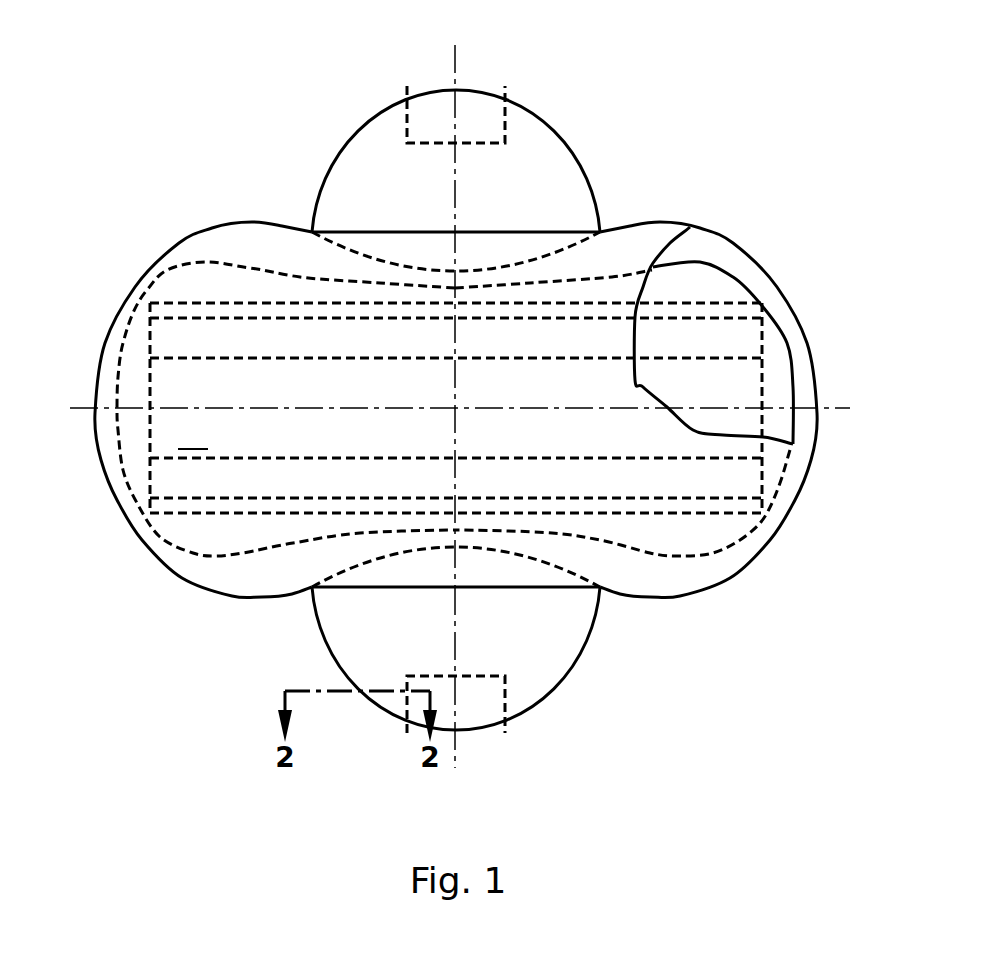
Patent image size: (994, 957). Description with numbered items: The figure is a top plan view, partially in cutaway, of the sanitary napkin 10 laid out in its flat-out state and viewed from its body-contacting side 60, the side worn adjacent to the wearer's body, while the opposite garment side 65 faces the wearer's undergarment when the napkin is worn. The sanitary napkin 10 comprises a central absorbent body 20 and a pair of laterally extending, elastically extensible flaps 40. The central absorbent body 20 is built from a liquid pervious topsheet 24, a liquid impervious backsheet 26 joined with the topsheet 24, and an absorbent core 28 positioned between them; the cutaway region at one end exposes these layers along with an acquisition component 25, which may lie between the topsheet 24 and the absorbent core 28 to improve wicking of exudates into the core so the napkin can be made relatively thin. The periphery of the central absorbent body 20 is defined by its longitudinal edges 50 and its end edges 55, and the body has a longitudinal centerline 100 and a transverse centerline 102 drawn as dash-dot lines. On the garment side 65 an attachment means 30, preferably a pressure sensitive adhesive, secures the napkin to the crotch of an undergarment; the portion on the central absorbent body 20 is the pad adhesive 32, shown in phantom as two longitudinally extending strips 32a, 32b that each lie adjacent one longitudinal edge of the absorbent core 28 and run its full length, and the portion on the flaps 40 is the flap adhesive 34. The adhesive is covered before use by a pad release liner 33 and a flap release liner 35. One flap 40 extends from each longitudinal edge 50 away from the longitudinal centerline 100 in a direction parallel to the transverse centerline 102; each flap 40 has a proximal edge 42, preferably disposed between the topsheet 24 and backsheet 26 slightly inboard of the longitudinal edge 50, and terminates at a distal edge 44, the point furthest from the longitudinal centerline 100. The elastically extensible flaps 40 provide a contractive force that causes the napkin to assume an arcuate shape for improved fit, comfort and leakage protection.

The sanitary napkin 10 is at (655, 101).
The central absorbent body 20 is at (706, 635).
The liquid pervious topsheet 24 is at (707, 532).
The acquisition component 25 is at (727, 292).
The liquid impervious backsheet 26 is at (750, 272).
The absorbent core 28 is at (783, 340).
The attachment means 30 is at (427, 105).
The pad adhesive 32 is at (737, 347).
The first longitudinally extending adhesive strip 32a is at (170, 477).
The second longitudinally extending adhesive strip 32b is at (167, 345).
The pad release liner 33 is at (763, 435).
The flap adhesive 34 is at (430, 112).
The flap release liner 35 is at (407, 131).
The elastically extensible flap 40 is at (548, 630).
The proximal edge 42 is at (355, 252).
The distal edge 44 is at (457, 744).
The longitudinal edge 50 is at (560, 232).
The end edge 55 is at (157, 257).
The body-contacting side 60 is at (194, 435).
The garment side 65 is at (163, 612).
The longitudinal centerline 100 is at (77, 410).
The transverse centerline 102 is at (457, 53).